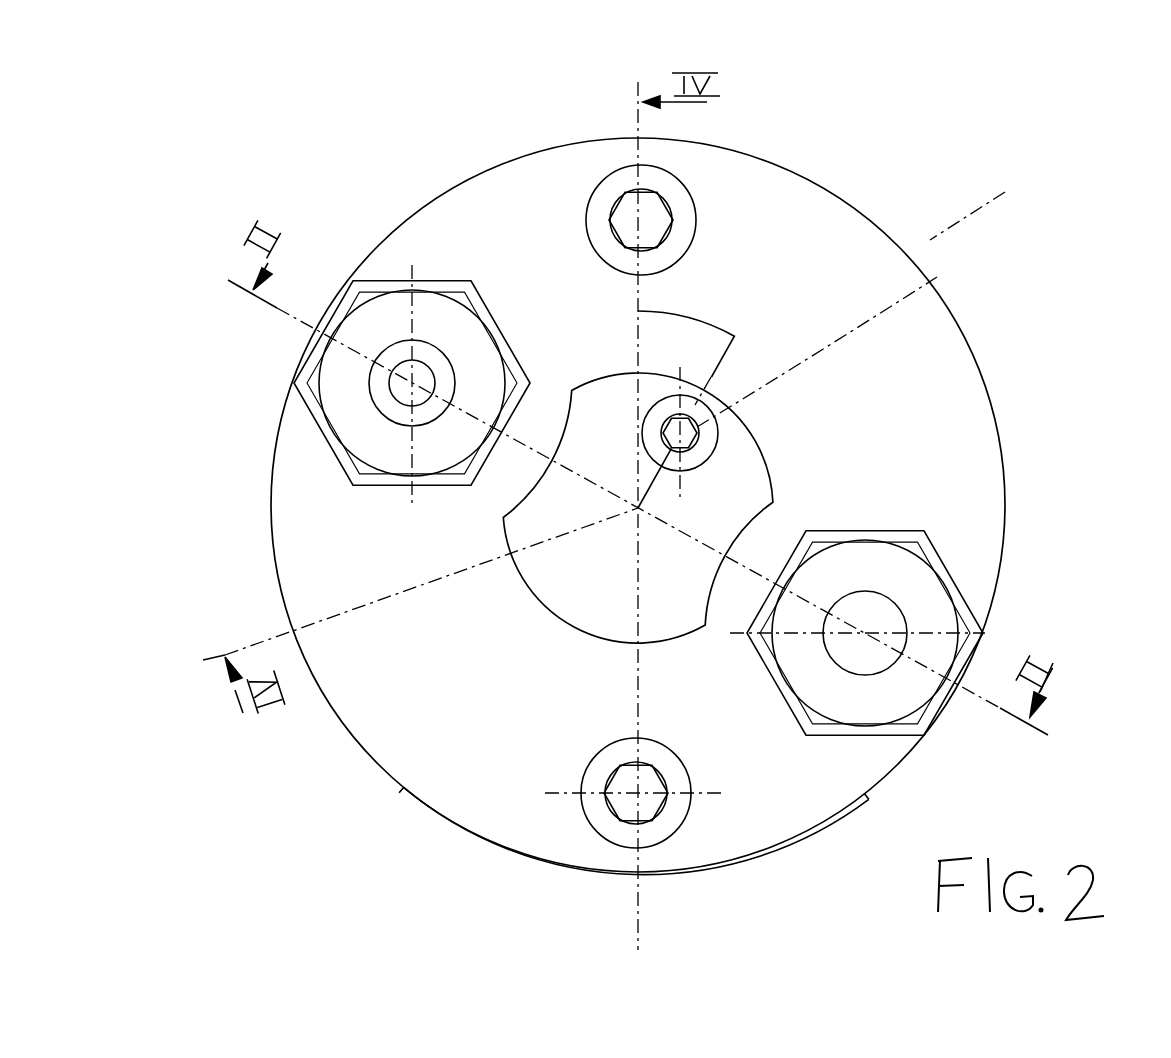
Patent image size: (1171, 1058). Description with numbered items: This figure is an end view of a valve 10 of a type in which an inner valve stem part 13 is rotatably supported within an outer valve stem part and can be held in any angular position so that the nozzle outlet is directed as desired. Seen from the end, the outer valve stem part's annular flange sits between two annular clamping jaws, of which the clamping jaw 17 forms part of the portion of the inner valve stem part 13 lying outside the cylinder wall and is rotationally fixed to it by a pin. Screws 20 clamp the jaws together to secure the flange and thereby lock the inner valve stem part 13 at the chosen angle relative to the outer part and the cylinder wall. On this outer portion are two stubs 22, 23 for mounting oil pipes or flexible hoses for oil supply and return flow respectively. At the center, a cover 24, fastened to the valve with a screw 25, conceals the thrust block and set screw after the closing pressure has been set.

The valve 10 is at (937, 226).
The inner valve stem part 13 is at (987, 400).
The annular clamping jaw 17 is at (540, 150).
The screws 20 is at (682, 945).
The stub 22 is at (332, 393).
The stub 23 is at (1040, 597).
The cover 24 is at (587, 596).
The screw 25 is at (975, 292).